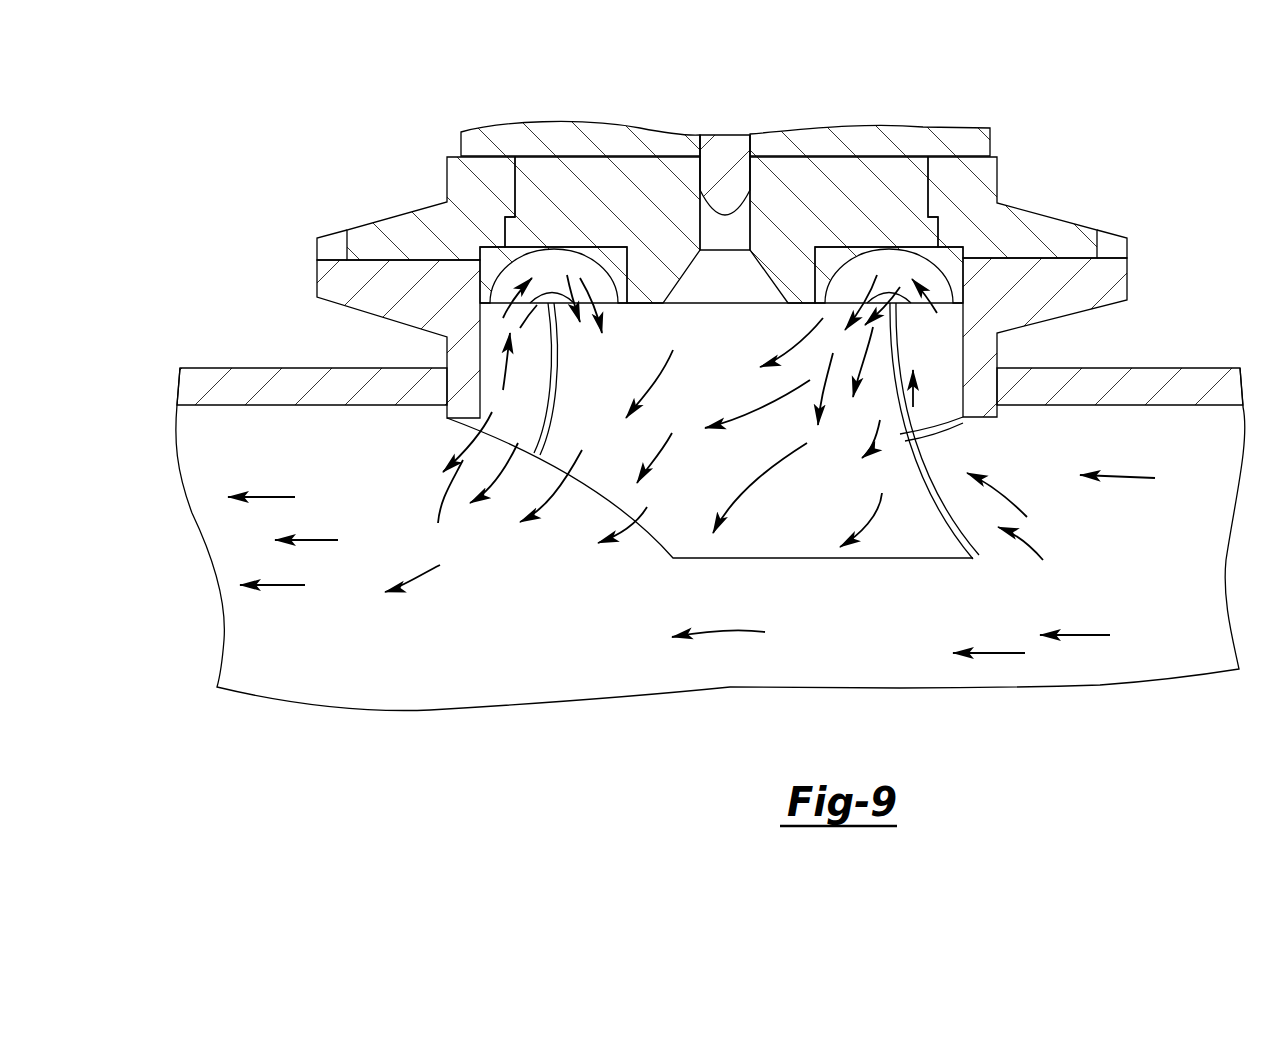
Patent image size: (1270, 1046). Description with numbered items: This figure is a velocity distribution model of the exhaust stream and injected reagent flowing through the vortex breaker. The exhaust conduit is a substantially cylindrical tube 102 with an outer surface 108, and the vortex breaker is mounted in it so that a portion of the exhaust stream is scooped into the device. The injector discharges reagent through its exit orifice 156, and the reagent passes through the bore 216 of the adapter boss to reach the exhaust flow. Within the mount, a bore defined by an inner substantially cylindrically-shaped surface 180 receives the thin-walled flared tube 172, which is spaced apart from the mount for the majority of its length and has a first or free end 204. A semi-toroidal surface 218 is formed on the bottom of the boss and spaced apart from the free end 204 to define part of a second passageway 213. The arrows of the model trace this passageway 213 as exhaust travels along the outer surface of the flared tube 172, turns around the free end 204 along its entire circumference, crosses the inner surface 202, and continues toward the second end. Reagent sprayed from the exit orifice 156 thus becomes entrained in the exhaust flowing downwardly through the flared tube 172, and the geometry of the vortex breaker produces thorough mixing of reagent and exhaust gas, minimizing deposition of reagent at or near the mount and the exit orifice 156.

The cylindrical tube 102 is at (1174, 368).
The outer surface 108 is at (215, 368).
The exit orifice 156 is at (748, 233).
The flared tube 172 is at (530, 362).
The inner substantially cylindrically-shaped surface 180 is at (923, 393).
The inner surface 202 is at (917, 478).
The free end 204 is at (893, 290).
The second passageway 213 is at (487, 500).
The bore 216 is at (1046, 343).
The semi-toroidal surface 218 is at (533, 263).